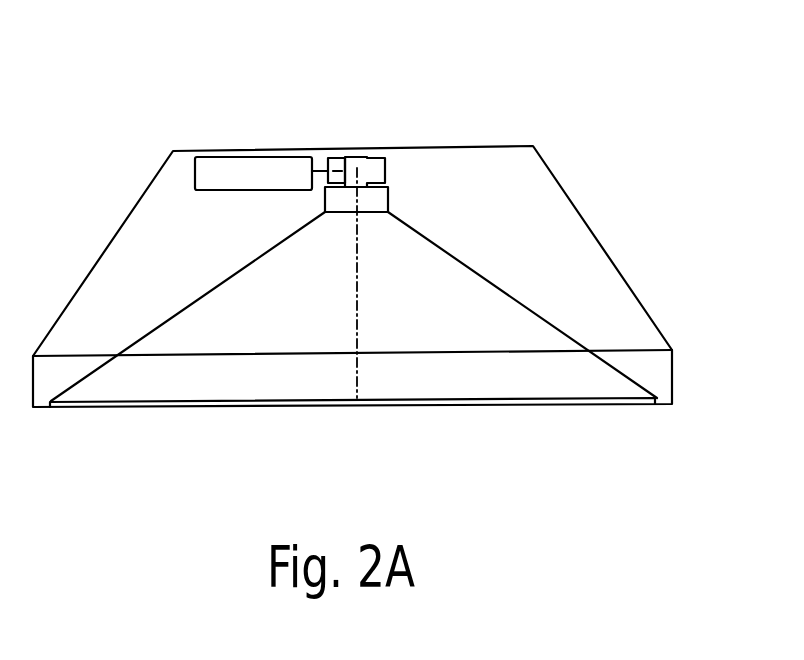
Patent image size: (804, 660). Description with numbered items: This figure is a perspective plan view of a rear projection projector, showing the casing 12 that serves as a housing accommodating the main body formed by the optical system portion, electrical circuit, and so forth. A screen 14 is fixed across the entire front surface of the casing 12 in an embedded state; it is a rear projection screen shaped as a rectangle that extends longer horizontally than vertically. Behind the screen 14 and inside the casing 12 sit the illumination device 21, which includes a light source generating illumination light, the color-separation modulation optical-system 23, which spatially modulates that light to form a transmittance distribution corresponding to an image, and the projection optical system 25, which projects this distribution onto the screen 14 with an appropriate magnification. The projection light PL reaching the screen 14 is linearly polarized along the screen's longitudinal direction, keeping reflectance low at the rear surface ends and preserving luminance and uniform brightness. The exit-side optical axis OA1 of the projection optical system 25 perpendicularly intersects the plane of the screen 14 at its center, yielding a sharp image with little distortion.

The casing 12 is at (587, 225).
The screen 14 is at (598, 403).
The illumination device 21 is at (242, 170).
The color-separation modulation optical-system 23 is at (373, 170).
The projection optical system 25 is at (377, 206).
The projection light PL is at (547, 322).
The exit-side optical axis OA1 is at (355, 308).